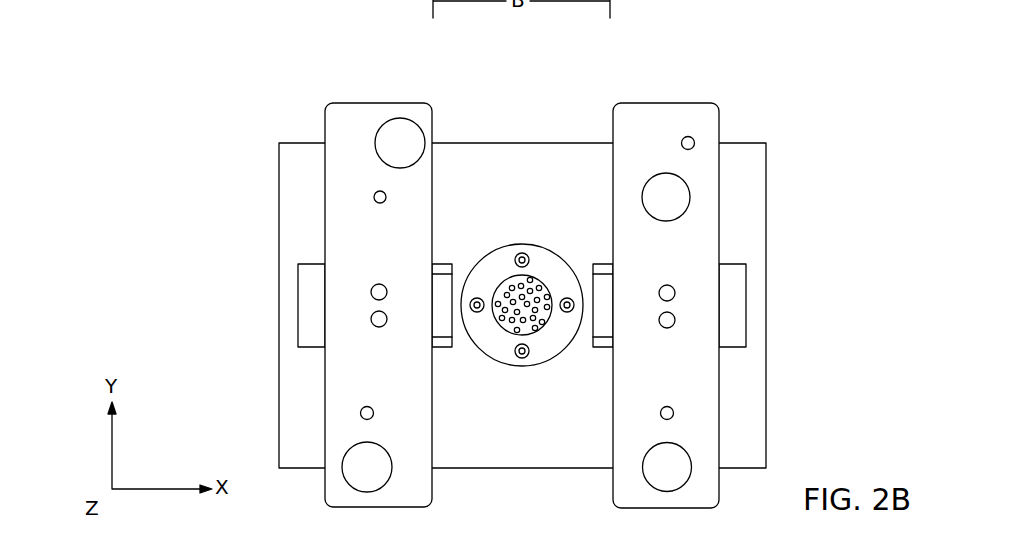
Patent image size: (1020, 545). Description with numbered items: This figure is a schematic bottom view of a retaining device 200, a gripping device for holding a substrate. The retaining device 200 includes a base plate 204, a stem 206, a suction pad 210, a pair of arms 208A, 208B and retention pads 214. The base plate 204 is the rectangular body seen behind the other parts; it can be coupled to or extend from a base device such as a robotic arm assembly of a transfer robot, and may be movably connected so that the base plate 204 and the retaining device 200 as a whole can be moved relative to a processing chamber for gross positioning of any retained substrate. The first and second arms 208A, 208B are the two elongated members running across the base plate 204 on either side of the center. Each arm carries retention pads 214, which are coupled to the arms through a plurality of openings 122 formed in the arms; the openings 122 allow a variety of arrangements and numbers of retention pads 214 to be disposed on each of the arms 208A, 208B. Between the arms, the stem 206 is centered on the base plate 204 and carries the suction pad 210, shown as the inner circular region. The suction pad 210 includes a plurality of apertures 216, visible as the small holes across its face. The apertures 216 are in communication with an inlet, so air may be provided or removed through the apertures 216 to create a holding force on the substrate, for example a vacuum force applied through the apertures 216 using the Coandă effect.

The retaining device 200 is at (283, 44).
The base plate 204 is at (297, 143).
The first arm 208A is at (372, 103).
The second arm 208B is at (648, 104).
The retention pad 214 is at (423, 133).
The opening 122 is at (702, 126).
The stem 206 is at (558, 268).
The suction pad 210 is at (503, 328).
The aperture 216 is at (493, 285).